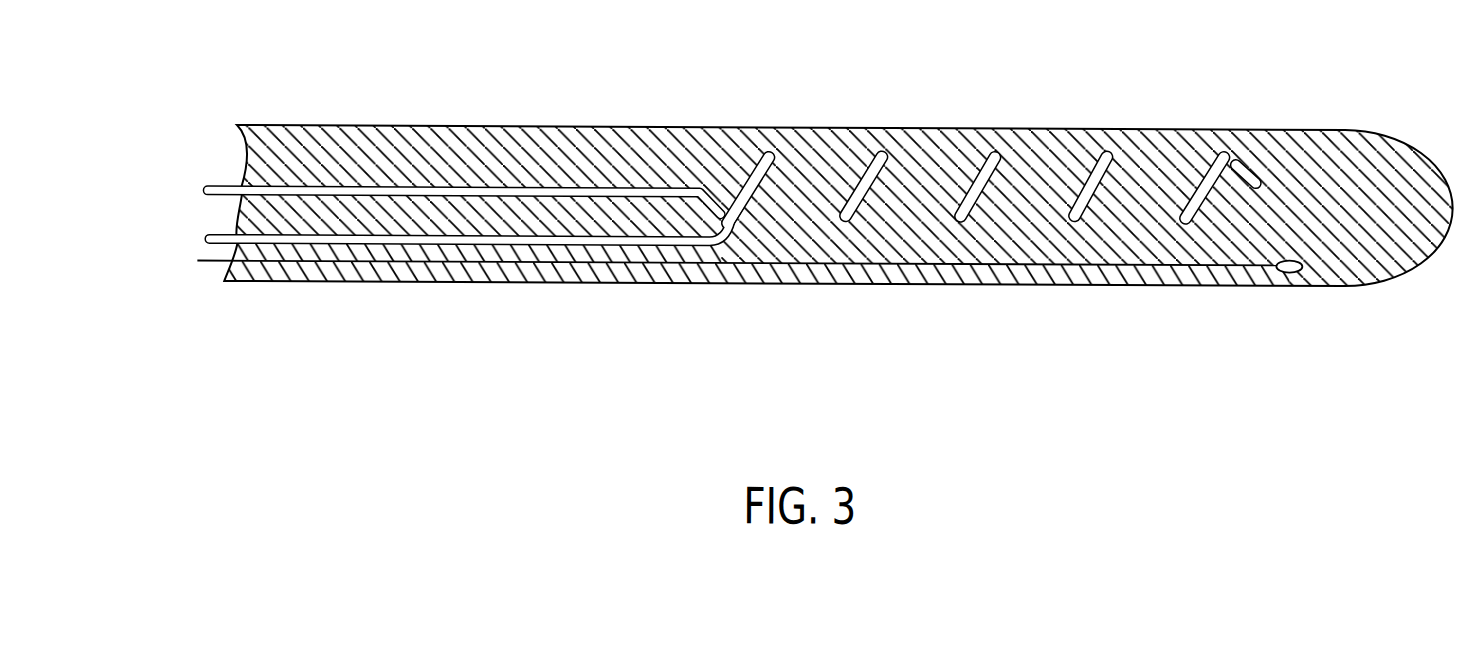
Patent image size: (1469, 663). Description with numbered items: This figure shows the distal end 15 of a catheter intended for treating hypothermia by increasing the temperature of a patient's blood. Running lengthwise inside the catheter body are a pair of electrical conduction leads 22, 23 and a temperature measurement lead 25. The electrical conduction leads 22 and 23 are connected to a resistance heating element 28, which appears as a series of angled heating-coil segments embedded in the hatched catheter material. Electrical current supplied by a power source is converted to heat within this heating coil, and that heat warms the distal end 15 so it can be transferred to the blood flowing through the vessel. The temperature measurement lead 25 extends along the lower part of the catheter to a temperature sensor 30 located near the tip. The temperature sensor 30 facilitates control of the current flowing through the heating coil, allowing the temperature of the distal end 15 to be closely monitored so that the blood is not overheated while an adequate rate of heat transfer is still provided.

The distal end 15 is at (636, 280).
The electrical conduction lead 22 is at (227, 183).
The electrical conduction lead 23 is at (222, 232).
The temperature measurement lead 25 is at (212, 262).
The resistance heating element 28 is at (1033, 183).
The temperature sensor 30 is at (1290, 268).